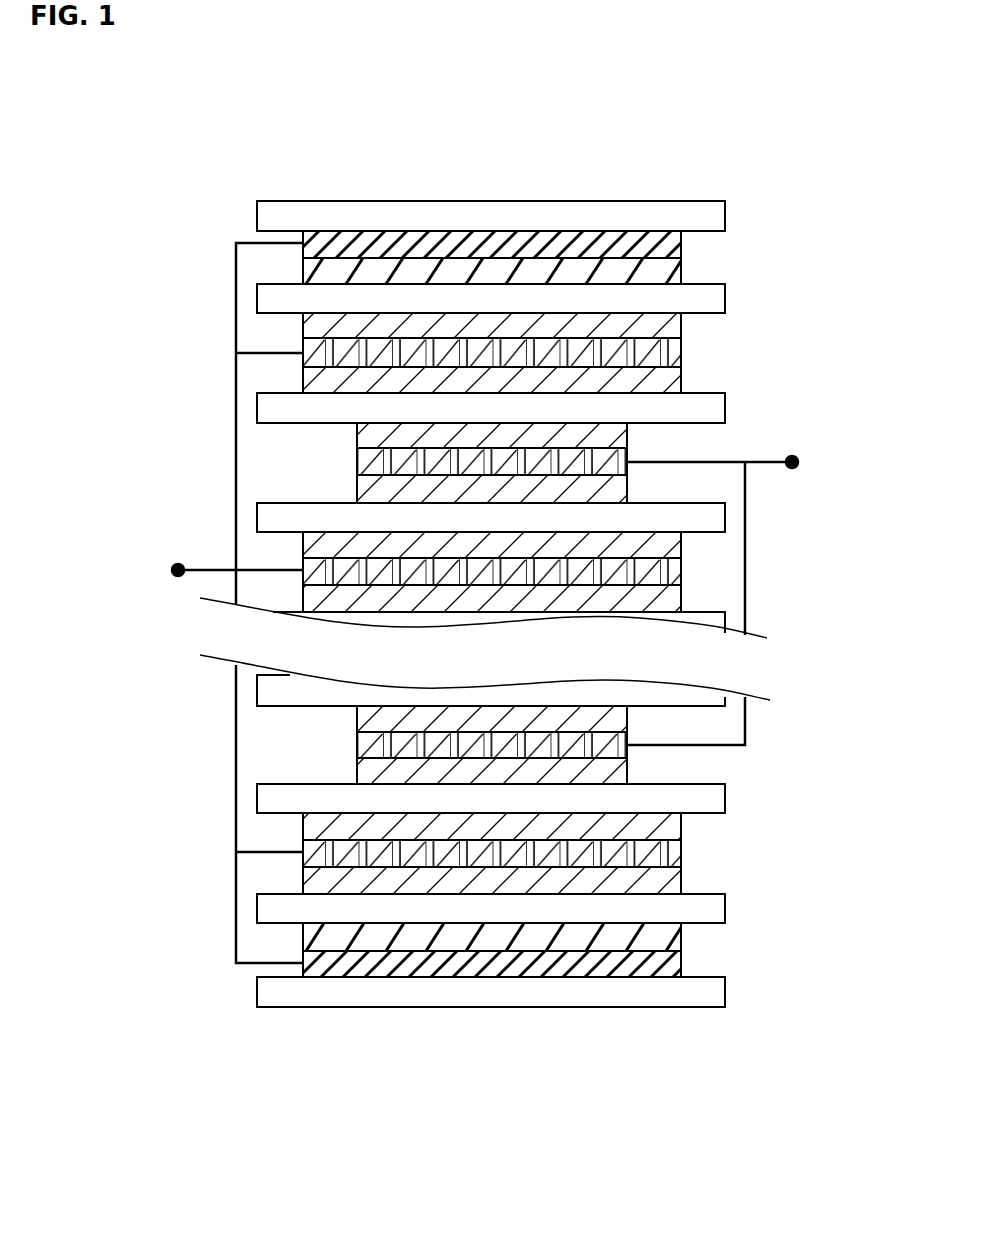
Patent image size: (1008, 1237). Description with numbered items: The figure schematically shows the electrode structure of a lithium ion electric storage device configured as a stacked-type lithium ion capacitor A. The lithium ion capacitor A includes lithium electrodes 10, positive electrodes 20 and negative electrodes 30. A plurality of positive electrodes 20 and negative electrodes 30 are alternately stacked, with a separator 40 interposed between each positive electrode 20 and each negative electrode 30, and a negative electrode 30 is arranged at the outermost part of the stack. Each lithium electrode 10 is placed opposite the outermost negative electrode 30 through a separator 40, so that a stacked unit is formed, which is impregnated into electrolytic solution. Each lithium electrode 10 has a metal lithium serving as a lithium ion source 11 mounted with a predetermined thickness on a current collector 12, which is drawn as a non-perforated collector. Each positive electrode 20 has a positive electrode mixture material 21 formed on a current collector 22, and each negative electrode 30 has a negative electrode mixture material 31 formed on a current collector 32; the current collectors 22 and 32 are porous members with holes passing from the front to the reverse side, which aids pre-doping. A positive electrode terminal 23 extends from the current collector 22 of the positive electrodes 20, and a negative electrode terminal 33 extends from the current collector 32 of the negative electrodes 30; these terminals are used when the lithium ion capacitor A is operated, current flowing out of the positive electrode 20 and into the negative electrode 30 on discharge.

The lithium ion capacitor A is at (669, 180).
The lithium electrode 10 is at (587, 606).
The lithium ion source 11 is at (675, 268).
The current collector 12 is at (672, 241).
The positive electrode 20 is at (369, 603).
The positive electrode mixture material 21 is at (365, 433).
The current collector 22 is at (365, 461).
The positive electrode terminal 23 is at (806, 462).
The negative electrode 30 is at (571, 603).
The negative electrode mixture material 31 is at (668, 324).
The current collector 32 is at (668, 351).
The negative electrode terminal 33 is at (171, 570).
The separator 40 is at (298, 215).